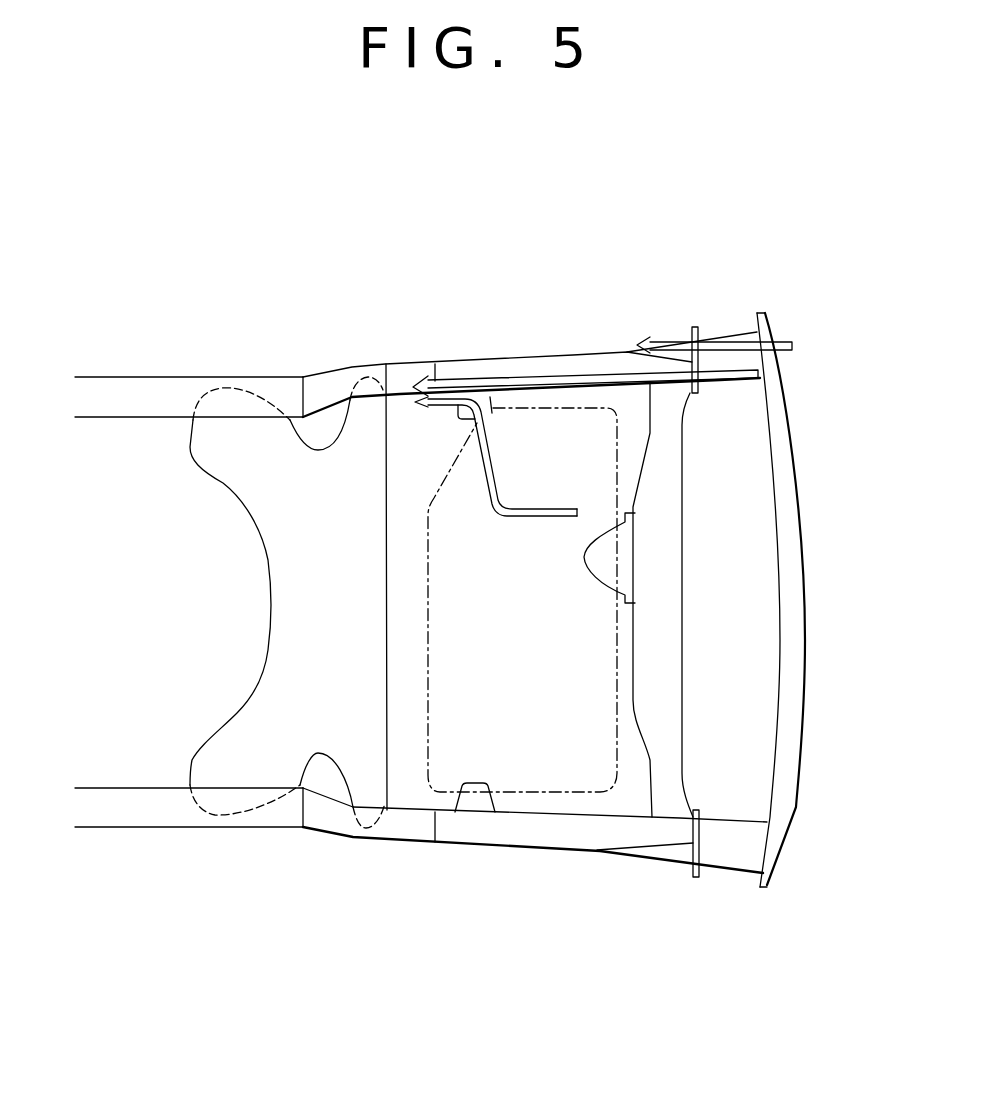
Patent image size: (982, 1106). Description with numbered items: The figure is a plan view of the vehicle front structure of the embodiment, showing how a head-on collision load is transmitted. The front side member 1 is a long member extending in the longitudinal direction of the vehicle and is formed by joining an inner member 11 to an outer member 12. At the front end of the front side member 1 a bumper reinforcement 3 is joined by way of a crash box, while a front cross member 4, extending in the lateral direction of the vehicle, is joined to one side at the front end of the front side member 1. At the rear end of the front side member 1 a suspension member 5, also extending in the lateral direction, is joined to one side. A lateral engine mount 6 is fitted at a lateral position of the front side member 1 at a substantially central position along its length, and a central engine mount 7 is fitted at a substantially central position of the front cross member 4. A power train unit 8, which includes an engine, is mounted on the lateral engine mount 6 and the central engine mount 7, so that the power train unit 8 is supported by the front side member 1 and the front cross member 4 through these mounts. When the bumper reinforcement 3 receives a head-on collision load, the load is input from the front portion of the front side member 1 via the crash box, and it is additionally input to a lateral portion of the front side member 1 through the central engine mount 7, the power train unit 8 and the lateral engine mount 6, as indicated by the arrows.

The front side member 1 is at (421, 600).
The bumper reinforcement 3 is at (792, 672).
The front cross member 4 is at (658, 655).
The suspension member 5 is at (240, 483).
The lateral engine mount 6 is at (483, 397).
The central engine mount 7 is at (627, 558).
The power train unit 8 is at (455, 578).
The inner member 11 is at (523, 368).
The outer member 12 is at (627, 350).